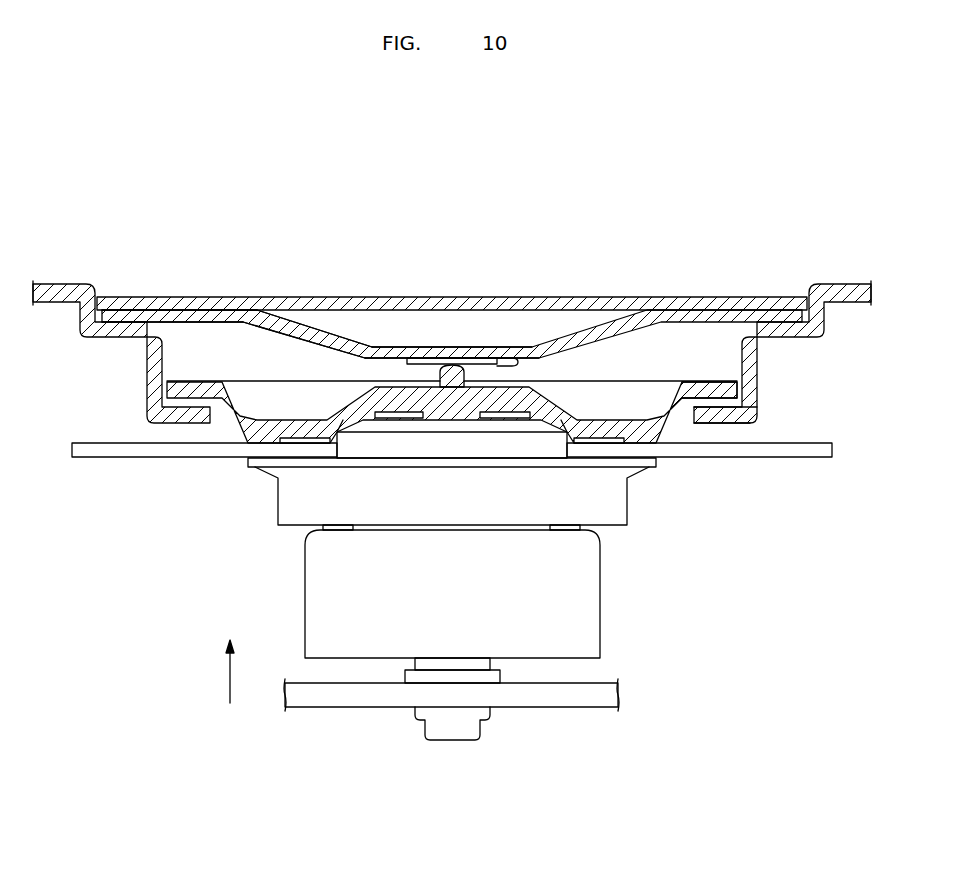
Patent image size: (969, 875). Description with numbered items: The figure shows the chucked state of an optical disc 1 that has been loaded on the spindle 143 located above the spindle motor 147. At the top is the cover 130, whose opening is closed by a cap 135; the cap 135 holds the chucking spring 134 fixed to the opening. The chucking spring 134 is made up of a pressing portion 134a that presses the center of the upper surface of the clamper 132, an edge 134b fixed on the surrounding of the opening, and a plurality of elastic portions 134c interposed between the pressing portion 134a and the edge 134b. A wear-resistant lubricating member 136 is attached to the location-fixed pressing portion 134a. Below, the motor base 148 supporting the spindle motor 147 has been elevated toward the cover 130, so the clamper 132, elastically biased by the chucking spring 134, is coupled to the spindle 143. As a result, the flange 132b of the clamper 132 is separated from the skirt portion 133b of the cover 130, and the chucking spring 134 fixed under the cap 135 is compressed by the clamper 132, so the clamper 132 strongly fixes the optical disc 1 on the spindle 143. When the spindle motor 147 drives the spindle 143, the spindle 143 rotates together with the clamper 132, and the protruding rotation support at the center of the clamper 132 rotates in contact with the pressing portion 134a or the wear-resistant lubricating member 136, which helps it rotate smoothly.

The optical disc 1 is at (832, 450).
The cover 130 is at (841, 285).
The skirt portion 133b is at (713, 425).
The cap 135 is at (611, 298).
The chucking spring 134 is at (430, 228).
The pressing portion 134a is at (412, 348).
The edge 134b is at (198, 308).
The elastic portions 134c is at (303, 325).
The wear-resistant lubricating member 136 is at (518, 358).
The clamper 132 is at (648, 362).
The flange 132b is at (707, 383).
The spindle 143 is at (650, 502).
The spindle motor 147 is at (622, 598).
The motor base 148 is at (583, 697).